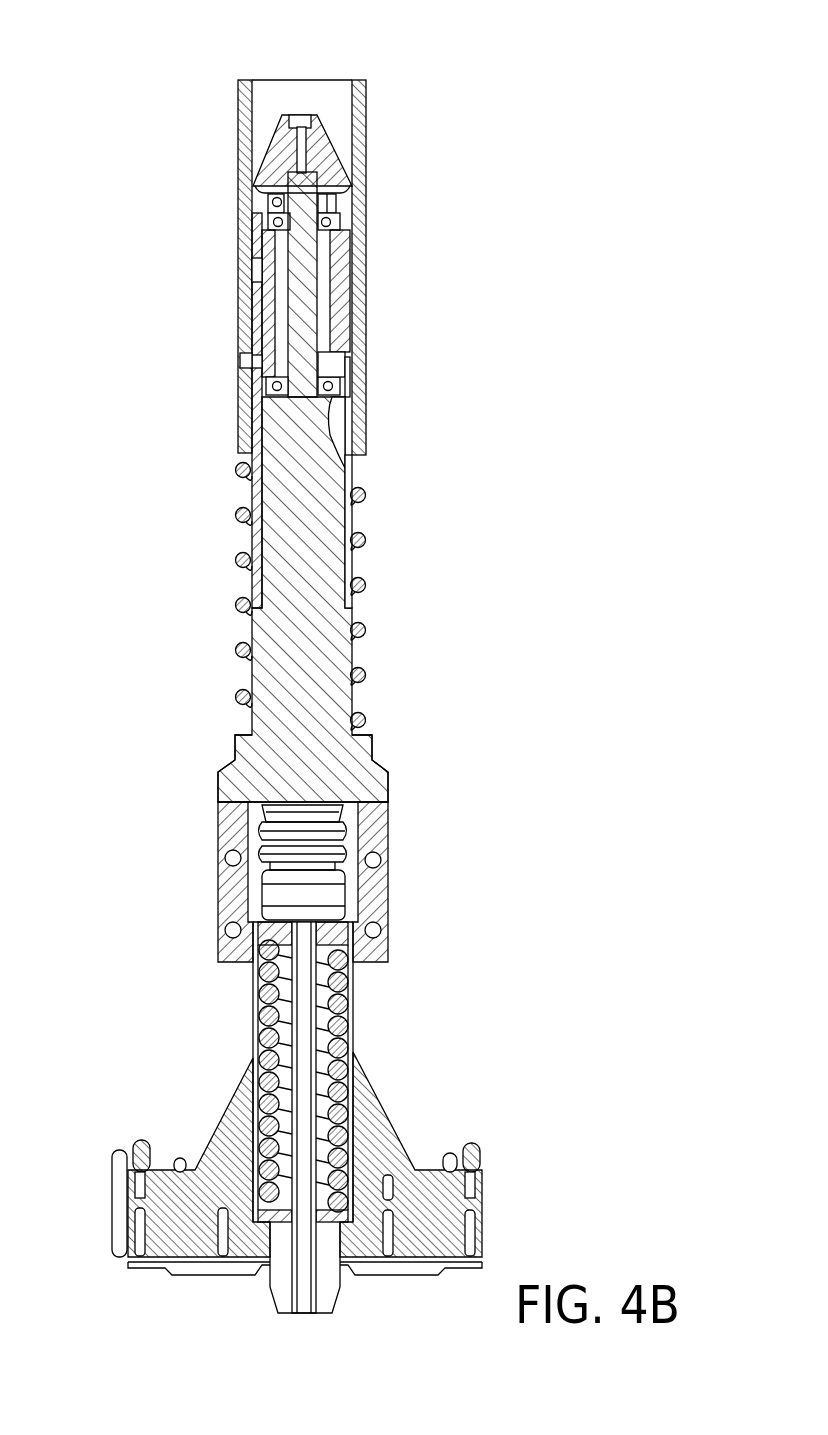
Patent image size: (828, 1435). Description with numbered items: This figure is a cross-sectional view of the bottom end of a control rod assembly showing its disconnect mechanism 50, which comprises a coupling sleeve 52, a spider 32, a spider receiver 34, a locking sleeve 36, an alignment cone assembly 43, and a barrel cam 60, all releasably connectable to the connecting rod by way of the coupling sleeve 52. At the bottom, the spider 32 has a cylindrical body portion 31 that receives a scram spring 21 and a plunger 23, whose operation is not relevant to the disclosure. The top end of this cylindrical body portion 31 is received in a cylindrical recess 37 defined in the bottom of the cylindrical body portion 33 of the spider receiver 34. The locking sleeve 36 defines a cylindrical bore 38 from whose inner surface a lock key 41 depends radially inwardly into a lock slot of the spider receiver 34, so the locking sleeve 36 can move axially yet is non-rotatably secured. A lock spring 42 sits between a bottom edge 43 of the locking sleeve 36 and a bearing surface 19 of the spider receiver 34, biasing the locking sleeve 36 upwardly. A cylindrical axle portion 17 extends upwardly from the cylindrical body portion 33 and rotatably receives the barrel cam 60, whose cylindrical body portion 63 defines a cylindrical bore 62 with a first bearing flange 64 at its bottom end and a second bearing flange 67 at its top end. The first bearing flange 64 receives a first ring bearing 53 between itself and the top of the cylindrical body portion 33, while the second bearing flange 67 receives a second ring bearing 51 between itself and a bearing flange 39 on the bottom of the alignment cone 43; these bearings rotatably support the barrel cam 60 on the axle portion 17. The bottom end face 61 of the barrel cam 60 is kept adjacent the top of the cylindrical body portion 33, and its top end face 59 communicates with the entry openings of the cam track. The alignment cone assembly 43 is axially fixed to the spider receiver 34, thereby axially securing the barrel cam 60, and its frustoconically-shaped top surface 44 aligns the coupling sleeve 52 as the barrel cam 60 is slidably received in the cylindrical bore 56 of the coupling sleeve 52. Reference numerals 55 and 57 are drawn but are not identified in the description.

The cylindrical axle portion 17 is at (308, 328).
The bearing surface 19 is at (365, 737).
The scram spring 21 is at (345, 1040).
The plunger 23 is at (339, 1293).
The cylindrical body portion 31 is at (250, 1030).
The spider 32 is at (447, 1113).
The cylindrical body portion 33 is at (295, 613).
The spider receiver 34 is at (197, 795).
The locking sleeve 36 is at (226, 415).
The cylindrical recess 37 is at (362, 846).
The cylindrical bore 38 is at (347, 469).
The bearing flange 39 is at (266, 263).
The lock key 41 is at (262, 411).
The lock spring 42 is at (237, 603).
The alignment cone assembly 43 is at (340, 138).
The frustoconically-shaped top surface 44 is at (273, 142).
The disconnect mechanism 50 is at (561, 241).
The second ring bearing 51 is at (352, 220).
The coupling sleeve 52 is at (214, 223).
The first ring bearing 53 is at (360, 381).
The left tube wall 55 is at (241, 79).
The cylindrical bore 56 is at (352, 112).
The right lower bearing 57 is at (360, 375).
The top end face 59 is at (263, 212).
The barrel cam 60 is at (360, 308).
The bottom end face 61 is at (340, 419).
The cylindrical bore 62 is at (263, 331).
The cylindrical body portion 63 is at (300, 266).
The first bearing flange 64 is at (338, 347).
The second bearing flange 67 is at (335, 225).